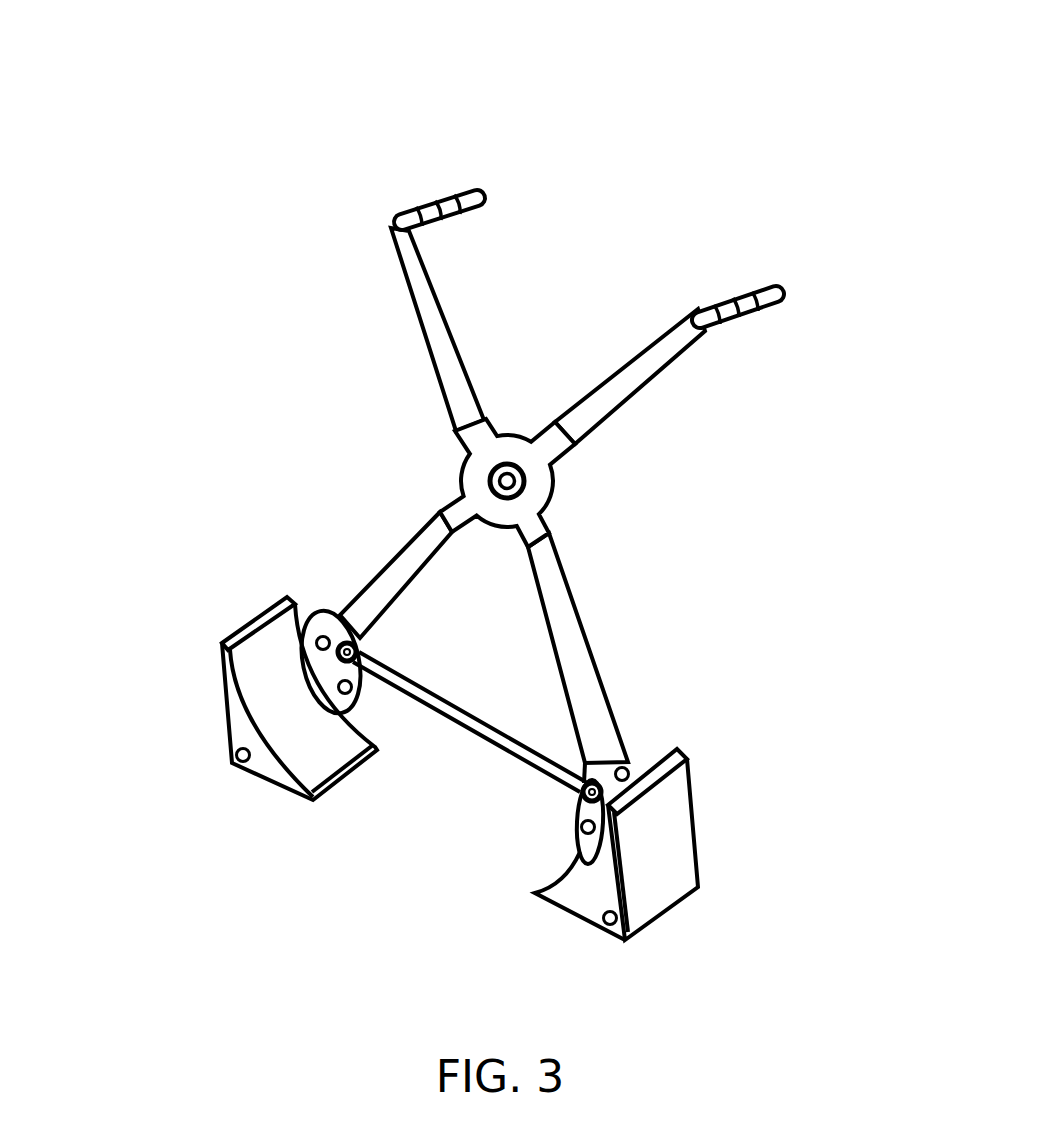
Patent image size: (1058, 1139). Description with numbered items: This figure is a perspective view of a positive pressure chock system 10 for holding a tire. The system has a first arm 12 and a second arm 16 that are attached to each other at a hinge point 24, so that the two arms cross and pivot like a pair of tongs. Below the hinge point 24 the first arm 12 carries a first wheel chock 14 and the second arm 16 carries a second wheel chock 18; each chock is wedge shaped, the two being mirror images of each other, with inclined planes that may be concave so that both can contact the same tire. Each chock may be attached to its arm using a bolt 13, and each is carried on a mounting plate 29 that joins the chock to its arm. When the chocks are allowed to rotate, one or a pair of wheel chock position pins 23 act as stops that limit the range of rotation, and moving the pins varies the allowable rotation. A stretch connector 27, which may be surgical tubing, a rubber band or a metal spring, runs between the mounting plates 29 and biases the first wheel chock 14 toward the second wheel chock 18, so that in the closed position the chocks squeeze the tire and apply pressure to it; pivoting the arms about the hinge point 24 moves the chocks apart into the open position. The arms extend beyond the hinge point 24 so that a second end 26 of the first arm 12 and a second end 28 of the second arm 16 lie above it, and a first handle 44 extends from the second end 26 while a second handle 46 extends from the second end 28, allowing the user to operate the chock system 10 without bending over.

The positive pressure chock system 10 is at (811, 88).
The first arm 12 is at (586, 615).
The bolt 13 is at (233, 758).
The first wheel chock 14 is at (652, 887).
The second arm 16 is at (392, 560).
The second wheel chock 18 is at (298, 777).
The wheel chock position pin 23 is at (322, 636).
The hinge point 24 is at (508, 470).
The second end of first arm 26 is at (398, 233).
The stretch connector 27 is at (458, 727).
The second end of second arm 28 is at (695, 340).
The mounting plate 29 is at (337, 650).
The first handle 44 is at (452, 192).
The second handle 46 is at (731, 297).